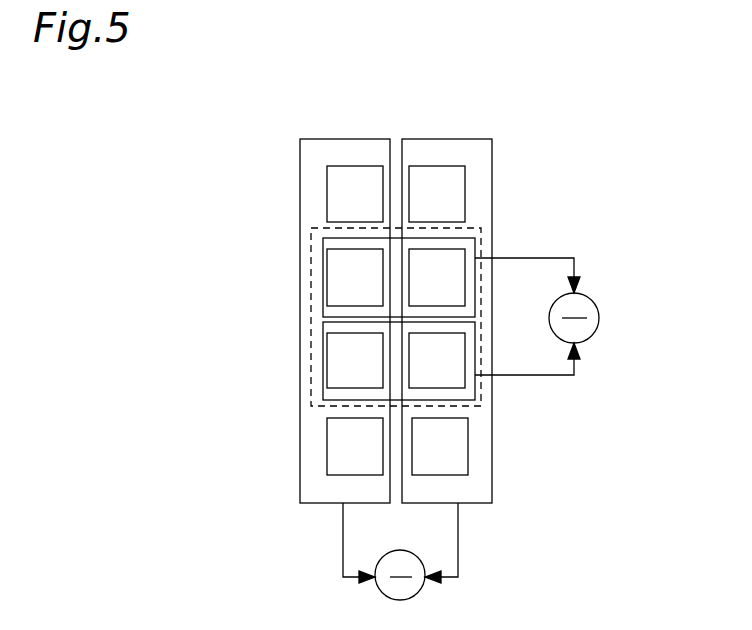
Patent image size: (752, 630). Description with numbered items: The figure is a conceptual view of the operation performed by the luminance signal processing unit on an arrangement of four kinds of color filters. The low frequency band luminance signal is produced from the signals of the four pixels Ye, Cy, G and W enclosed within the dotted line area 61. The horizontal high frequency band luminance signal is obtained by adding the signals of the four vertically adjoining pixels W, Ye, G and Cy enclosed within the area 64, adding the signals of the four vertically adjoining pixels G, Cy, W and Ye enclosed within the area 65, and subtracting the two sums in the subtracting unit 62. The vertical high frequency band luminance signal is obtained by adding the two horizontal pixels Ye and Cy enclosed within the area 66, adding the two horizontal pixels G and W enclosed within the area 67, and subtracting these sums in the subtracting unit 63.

The dotted line area 61 is at (483, 230).
The subtracting unit 62 is at (415, 595).
The subtracting unit 63 is at (590, 297).
The area 64 is at (328, 139).
The area 65 is at (430, 139).
The area 66 is at (320, 236).
The area 67 is at (322, 330).